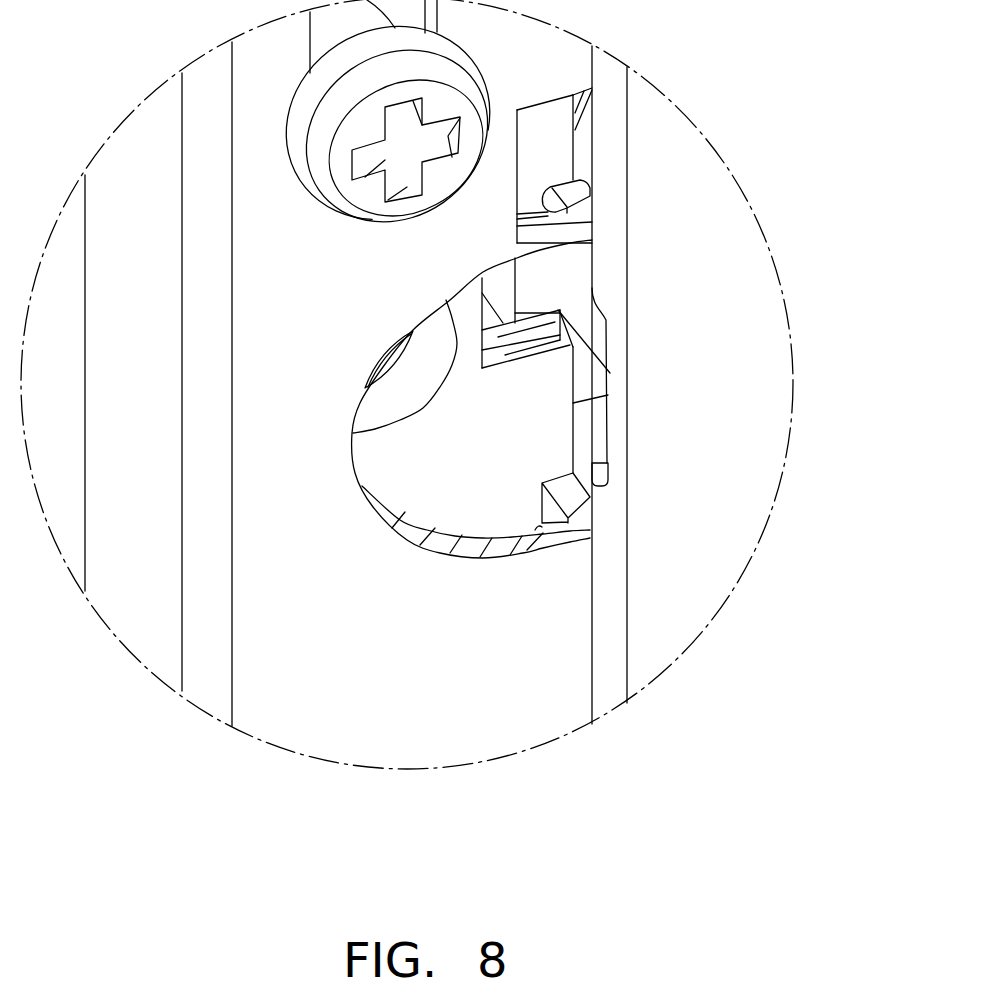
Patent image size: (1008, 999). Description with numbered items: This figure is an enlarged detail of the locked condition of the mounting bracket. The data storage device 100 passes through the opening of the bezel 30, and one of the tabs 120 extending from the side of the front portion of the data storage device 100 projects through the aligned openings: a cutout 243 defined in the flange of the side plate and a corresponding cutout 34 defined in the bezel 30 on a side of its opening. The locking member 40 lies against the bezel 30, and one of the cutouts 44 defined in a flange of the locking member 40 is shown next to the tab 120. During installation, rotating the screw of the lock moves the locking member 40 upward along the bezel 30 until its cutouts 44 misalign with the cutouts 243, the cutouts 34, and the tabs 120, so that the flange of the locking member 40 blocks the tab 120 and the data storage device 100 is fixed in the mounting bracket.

The bezel 30 is at (478, 425).
The cutouts 34 is at (560, 335).
The locking member 40 is at (315, 683).
The cutouts 44 is at (552, 224).
The data storage device 100 is at (715, 418).
The tabs 120 is at (550, 281).
The cutouts 243 is at (558, 310).